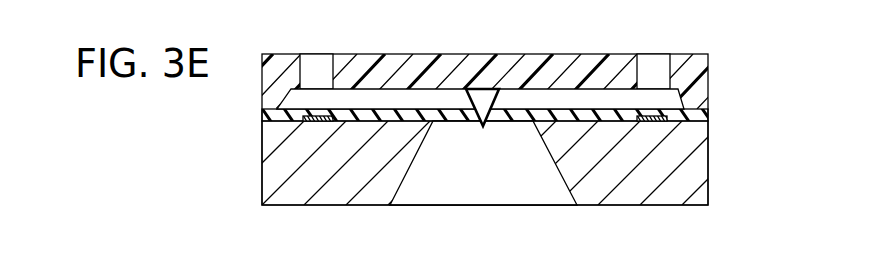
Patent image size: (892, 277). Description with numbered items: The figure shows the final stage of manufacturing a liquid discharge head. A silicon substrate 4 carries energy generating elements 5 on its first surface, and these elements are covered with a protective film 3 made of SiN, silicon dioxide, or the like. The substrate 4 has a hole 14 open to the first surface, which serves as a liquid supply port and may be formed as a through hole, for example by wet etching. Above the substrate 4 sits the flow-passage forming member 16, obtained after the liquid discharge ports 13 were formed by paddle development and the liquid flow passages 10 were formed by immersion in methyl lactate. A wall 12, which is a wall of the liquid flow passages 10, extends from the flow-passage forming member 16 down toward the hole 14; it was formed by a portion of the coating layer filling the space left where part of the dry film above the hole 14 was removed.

The protective film 3 is at (693, 117).
The substrate 4 is at (683, 192).
The energy generating elements 5 is at (655, 118).
The liquid flow passages 10 is at (672, 100).
The wall 12 is at (483, 110).
The liquid discharge ports 13 is at (638, 73).
The hole 14 is at (563, 180).
The flow-passage forming member 16 is at (695, 72).